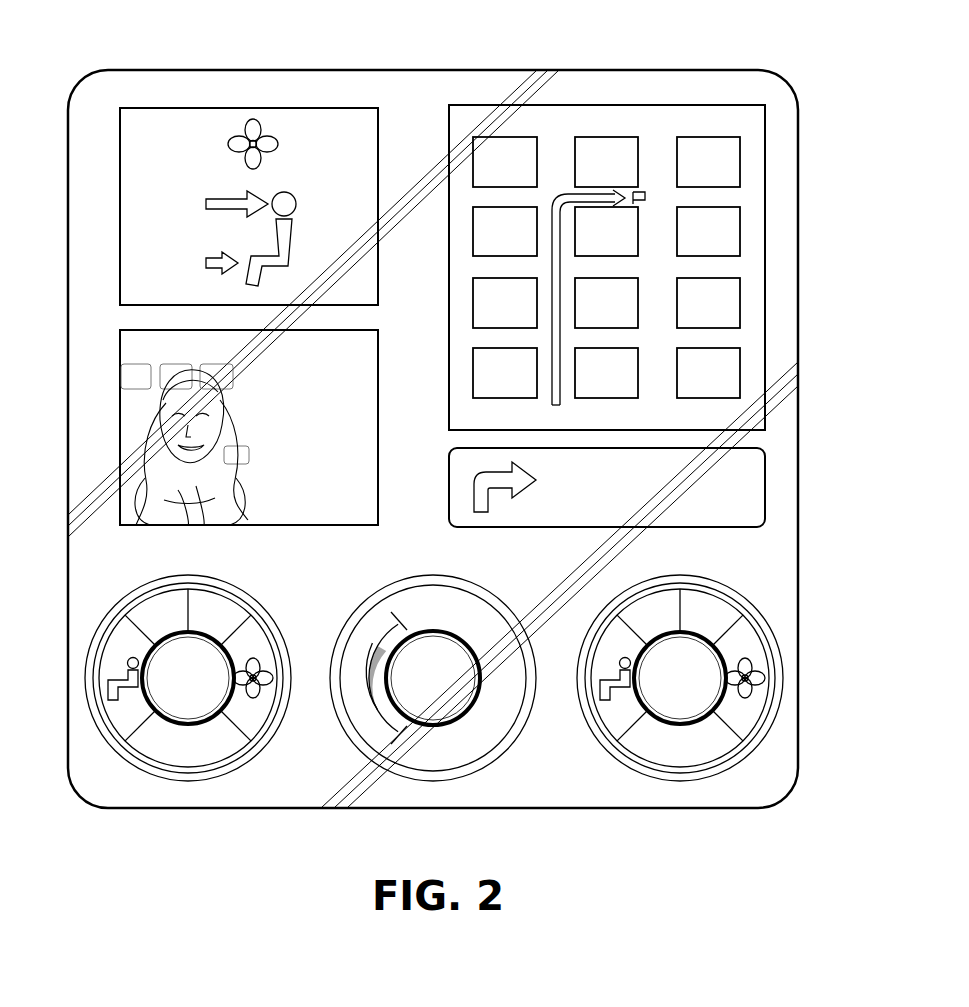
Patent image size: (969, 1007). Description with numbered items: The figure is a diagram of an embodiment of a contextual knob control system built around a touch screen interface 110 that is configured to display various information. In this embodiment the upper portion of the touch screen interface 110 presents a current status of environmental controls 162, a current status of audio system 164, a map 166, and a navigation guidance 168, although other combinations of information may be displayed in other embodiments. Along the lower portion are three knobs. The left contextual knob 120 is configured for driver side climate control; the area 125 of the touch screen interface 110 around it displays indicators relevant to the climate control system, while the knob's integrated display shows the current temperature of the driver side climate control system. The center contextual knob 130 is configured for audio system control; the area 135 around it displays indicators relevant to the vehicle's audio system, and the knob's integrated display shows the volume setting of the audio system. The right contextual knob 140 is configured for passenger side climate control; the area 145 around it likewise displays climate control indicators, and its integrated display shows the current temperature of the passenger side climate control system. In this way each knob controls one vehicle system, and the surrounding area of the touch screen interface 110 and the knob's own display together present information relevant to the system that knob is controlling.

The touch screen interface 110 is at (180, 70).
The current status of environmental controls 162 is at (120, 240).
The current status of audio system 164 is at (120, 418).
The map 166 is at (765, 228).
The navigation guidance 168 is at (765, 487).
The left contextual knob 120 is at (183, 704).
The area around left contextual knob 125 is at (104, 622).
The center contextual knob 130 is at (433, 695).
The area around center contextual knob 135 is at (400, 618).
The right contextual knob 140 is at (680, 698).
The area around right contextual knob 145 is at (704, 578).